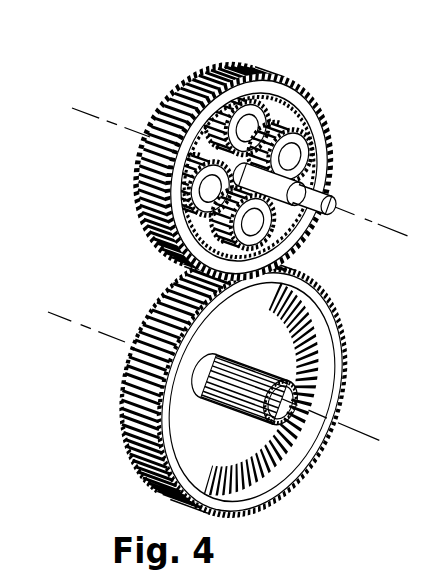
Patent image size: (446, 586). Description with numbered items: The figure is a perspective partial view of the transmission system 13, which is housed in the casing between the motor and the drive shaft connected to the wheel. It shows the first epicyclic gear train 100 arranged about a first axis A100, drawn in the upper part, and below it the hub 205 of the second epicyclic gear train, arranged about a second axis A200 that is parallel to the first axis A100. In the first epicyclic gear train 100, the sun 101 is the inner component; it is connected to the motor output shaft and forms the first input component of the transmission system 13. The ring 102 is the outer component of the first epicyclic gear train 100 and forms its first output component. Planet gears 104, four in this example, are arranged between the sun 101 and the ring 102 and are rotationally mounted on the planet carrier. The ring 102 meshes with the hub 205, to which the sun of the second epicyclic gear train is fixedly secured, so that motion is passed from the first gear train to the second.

The transmission system 13 is at (157, 66).
The first epicyclic gear train 100 is at (113, 172).
The first axis A100 is at (72, 108).
The sun 101 is at (256, 164).
The ring 102 is at (280, 87).
The planet gears 104 is at (194, 214).
The hub 205 is at (199, 385).
The second axis A200 is at (50, 312).